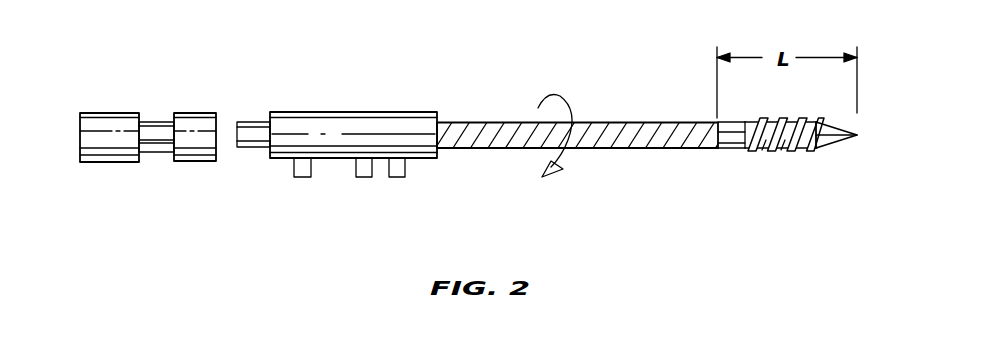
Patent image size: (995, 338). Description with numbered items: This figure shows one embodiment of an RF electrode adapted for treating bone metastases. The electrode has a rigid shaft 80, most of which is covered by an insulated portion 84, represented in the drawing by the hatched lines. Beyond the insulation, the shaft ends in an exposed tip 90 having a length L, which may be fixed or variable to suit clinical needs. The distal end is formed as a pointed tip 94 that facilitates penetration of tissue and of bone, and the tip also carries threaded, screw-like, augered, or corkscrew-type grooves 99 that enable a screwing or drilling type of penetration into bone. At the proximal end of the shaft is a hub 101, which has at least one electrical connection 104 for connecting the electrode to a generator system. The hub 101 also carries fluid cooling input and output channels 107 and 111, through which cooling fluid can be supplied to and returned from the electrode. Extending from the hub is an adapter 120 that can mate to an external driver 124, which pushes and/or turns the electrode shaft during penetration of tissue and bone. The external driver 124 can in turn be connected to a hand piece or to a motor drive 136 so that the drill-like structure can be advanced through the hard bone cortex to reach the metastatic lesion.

The rigid shaft 80 is at (637, 122).
The insulated portion 84 is at (667, 149).
The exposed tip 90 is at (765, 150).
The pointed tip 94 is at (838, 125).
The grooves 99 is at (788, 150).
The hub 101 is at (368, 112).
The electrical connection 104 is at (303, 177).
The fluid cooling input channel 107 is at (363, 177).
The fluid cooling output channel 111 is at (397, 177).
The adapter 120 is at (252, 122).
The external driver 124 is at (191, 113).
The motor drive 136 is at (112, 113).